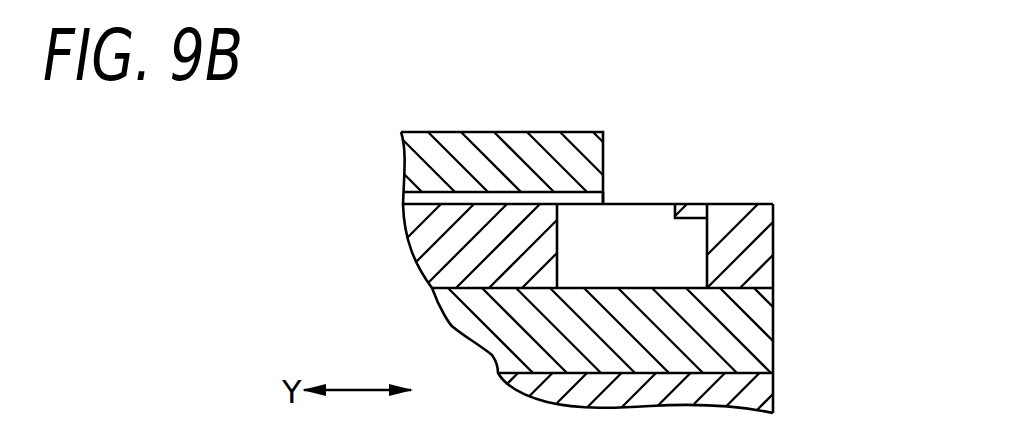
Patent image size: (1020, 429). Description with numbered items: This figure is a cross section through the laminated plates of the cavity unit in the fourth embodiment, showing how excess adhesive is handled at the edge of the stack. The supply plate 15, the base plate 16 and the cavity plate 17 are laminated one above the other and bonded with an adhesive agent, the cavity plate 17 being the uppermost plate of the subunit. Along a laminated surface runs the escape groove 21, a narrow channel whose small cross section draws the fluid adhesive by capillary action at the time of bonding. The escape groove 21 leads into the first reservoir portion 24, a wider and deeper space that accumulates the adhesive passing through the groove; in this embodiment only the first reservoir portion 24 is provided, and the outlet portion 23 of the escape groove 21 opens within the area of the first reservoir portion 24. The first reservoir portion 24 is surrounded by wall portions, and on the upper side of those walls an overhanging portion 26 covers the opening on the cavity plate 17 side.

The supply plate 15 is at (477, 327).
The base plate 16 is at (442, 262).
The cavity plate 17 is at (443, 167).
The escape groove 21 is at (515, 204).
The outlet portion 23 is at (605, 201).
The first reservoir portion 24 is at (690, 260).
The overhanging portion 26 is at (680, 206).